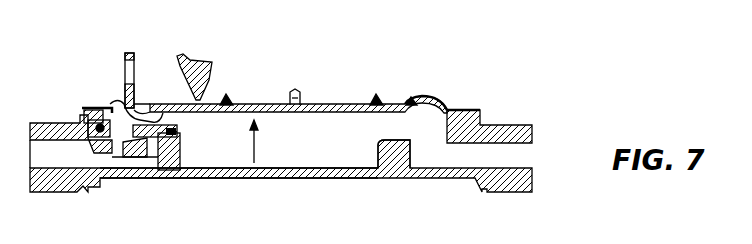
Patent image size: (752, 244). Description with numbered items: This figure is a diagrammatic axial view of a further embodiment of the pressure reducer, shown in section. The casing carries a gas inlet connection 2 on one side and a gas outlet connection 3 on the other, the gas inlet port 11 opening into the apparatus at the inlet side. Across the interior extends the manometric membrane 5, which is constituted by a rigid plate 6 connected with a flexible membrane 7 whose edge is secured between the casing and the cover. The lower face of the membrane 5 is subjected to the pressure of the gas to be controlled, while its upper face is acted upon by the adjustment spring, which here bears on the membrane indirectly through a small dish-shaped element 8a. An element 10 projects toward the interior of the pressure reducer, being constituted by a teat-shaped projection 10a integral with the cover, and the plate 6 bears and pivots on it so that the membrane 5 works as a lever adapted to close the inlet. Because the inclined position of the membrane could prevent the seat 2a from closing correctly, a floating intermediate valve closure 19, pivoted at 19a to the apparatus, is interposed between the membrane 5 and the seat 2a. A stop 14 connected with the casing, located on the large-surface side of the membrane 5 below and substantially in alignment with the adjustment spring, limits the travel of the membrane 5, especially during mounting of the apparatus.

The gas inlet connection 2 is at (53, 158).
The seat 2a is at (181, 143).
The gas outlet connection 3 is at (513, 158).
The manometric membrane 5 is at (260, 141).
The rigid plate 6 is at (347, 104).
The flexible membrane 7 is at (340, 114).
The dish-shaped element 8a is at (298, 97).
The element 10 is at (214, 79).
The teat-shaped projection 10a is at (205, 99).
The gas inlet port 11 is at (157, 133).
The stop 14 is at (397, 160).
The floating intermediate valve closure 19 is at (123, 114).
The pivot 19a is at (100, 113).